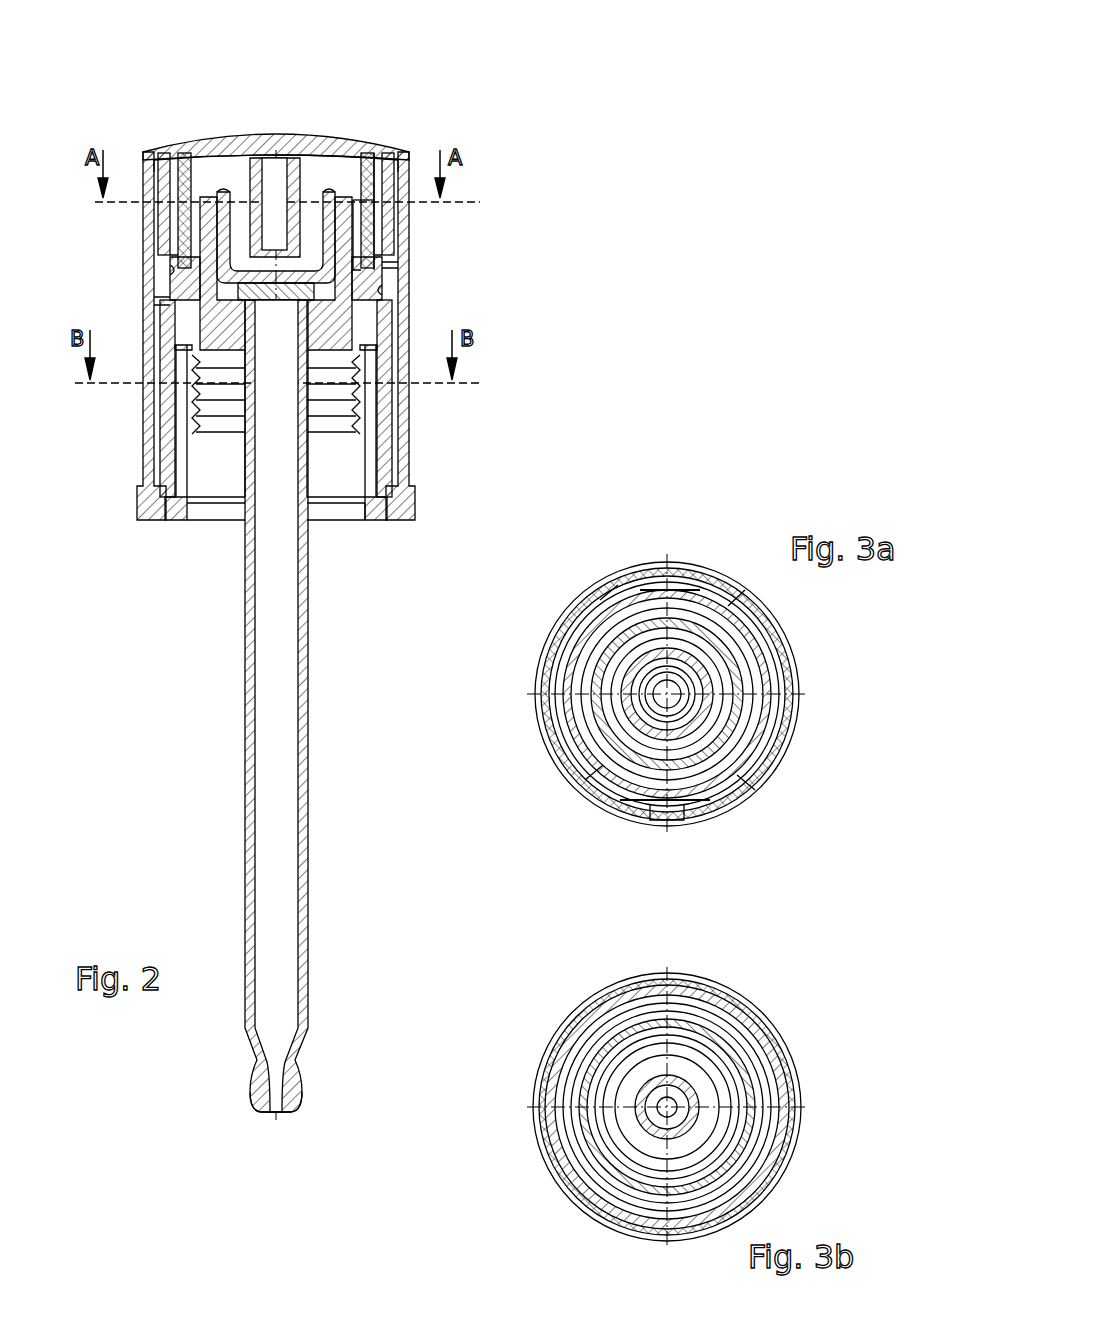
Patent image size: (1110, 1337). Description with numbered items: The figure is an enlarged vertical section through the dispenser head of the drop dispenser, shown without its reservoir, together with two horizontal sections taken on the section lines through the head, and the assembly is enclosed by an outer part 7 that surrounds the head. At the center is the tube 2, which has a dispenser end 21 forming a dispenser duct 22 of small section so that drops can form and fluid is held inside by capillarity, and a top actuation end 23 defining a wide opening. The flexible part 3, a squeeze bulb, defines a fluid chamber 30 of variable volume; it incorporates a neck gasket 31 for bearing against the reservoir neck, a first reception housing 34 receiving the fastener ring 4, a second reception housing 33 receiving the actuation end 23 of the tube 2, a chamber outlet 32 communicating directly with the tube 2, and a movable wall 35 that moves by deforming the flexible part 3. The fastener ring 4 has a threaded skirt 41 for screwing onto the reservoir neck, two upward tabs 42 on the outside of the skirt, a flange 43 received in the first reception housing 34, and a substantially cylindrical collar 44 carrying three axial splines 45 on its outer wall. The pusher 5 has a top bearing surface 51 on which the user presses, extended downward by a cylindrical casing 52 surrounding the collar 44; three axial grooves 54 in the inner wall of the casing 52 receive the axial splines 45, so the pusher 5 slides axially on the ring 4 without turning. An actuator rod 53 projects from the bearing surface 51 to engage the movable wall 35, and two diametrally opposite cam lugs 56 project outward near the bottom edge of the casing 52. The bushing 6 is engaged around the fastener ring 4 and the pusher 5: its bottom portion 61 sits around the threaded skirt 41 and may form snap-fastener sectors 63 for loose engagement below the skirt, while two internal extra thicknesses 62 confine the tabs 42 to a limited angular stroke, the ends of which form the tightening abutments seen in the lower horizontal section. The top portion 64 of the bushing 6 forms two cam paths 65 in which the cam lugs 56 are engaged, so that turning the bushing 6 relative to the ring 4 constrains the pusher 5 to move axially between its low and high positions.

In FIG. 2, the tube 2 is at (238, 738).
In FIG. 3B, the tube 2 is at (746, 1050).
In FIG. 2, the flexible part 3 is at (330, 190).
In FIG. 3A, the flexible part 3 is at (622, 712).
In FIG. 2, the fastener ring 4 is at (405, 395).
In FIG. 3A, the fastener ring 4 is at (562, 650).
In FIG. 3B, the fastener ring 4 is at (602, 1030).
In FIG. 2, the pusher 5 is at (209, 150).
In FIG. 3A, the pusher 5 is at (772, 606).
In FIG. 2, the bushing 6 is at (170, 330).
In FIG. 3A, the bushing 6 is at (776, 720).
In FIG. 3B, the bushing 6 is at (762, 985).
In FIG. 2, the outer cap 7 is at (146, 150).
In FIG. 3A, the outer cap 7 is at (708, 565).
In FIG. 3B, the outer cap 7 is at (722, 970).
In FIG. 2, the dispenser end 21 is at (252, 1082).
In FIG. 2, the dispenser duct 22 is at (278, 1112).
In FIG. 2, the top actuation end 23 is at (240, 340).
In FIG. 2, the fluid chamber 30 is at (384, 152).
In FIG. 2, the neck gasket 31 is at (340, 480).
In FIG. 2, the chamber outlet 32 is at (287, 158).
In FIG. 2, the second reception housing 33 is at (175, 498).
In FIG. 2, the first reception housing 34 is at (404, 320).
In FIG. 2, the movable wall 35 is at (296, 165).
In FIG. 2, the threaded skirt 41 is at (405, 435).
In FIG. 3B, the threaded skirt 41 is at (557, 1062).
In FIG. 3B, the tabs 42 is at (557, 1125).
In FIG. 2, the flange 43 is at (90, 374).
In FIG. 3A, the collar 44 is at (612, 692).
In FIG. 2, the axial splines 45 is at (410, 152).
In FIG. 3A, the axial splines 45 is at (668, 562).
In FIG. 2, the top bearing surface 51 is at (248, 152).
In FIG. 2, the casing 52 is at (178, 220).
In FIG. 2, the actuator rod 53 is at (322, 170).
In FIG. 3A, the actuator rod 53 is at (690, 826).
In FIG. 2, the axial grooves 54 is at (394, 220).
In FIG. 3A, the axial grooves 54 is at (592, 596).
In FIG. 2, the cam lugs 56 is at (160, 270).
In FIG. 2, the bottom portion 61 is at (180, 440).
In FIG. 3B, the extra thicknesses 62 is at (592, 1215).
In FIG. 2, the snap-fastener sectors 63 is at (385, 520).
In FIG. 2, the top portion 64 is at (405, 200).
In FIG. 3A, the top portion 64 is at (792, 692).
In FIG. 2, the cam paths 65 is at (154, 300).
In FIG. 3A, the cam paths 65 is at (624, 590).